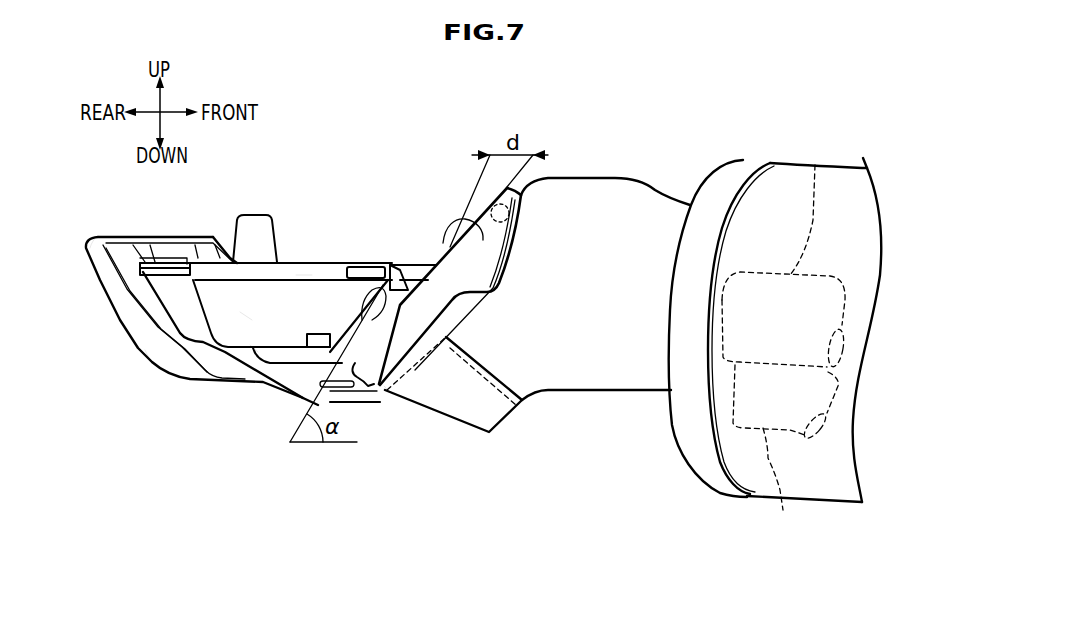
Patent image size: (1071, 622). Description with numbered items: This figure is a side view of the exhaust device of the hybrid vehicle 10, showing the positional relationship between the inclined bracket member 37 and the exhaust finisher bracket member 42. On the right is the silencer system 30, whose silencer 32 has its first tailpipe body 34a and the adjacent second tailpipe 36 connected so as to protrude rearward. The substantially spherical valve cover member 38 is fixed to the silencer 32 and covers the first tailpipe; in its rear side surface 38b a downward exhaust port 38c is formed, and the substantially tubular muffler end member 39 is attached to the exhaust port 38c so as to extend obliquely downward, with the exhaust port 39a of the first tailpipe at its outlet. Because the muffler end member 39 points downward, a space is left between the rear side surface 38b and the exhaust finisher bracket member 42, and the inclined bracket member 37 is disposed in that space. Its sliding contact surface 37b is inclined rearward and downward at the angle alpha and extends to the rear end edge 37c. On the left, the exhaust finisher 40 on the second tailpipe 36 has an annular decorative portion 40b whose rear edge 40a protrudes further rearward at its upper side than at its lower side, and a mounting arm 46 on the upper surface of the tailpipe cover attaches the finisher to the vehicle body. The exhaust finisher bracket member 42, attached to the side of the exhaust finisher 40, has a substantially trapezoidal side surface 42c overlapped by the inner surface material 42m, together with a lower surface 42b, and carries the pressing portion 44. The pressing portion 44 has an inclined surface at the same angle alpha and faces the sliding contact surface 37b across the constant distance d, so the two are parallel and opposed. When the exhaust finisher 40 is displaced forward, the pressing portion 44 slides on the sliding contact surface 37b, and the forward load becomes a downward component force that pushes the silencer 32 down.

The hybrid vehicle 10 is at (734, 121).
The silencer system 30 is at (770, 162).
The silencer 32 is at (845, 170).
The first tailpipe body 34a is at (813, 206).
The second tailpipe 36 is at (779, 483).
The inclined bracket member 37 is at (486, 210).
The sliding contact surface 37b is at (509, 258).
The rear end edge 37c is at (325, 393).
The valve cover member 38 is at (620, 177).
The rear side surface 38b is at (509, 207).
The exhaust port 38c is at (485, 372).
The muffler end member 39 is at (452, 405).
The exhaust port 39a is at (389, 393).
The exhaust finisher 40 is at (427, 263).
The rear edge 40a is at (87, 240).
The annular decorative portion 40b is at (149, 359).
The exhaust finisher bracket member 42 is at (337, 262).
The inner surface material 42m is at (302, 274).
The side surface 42c is at (245, 316).
The lower surface 42b is at (256, 350).
The pressing portion 44 is at (364, 320).
The mounting arm 46 is at (254, 224).